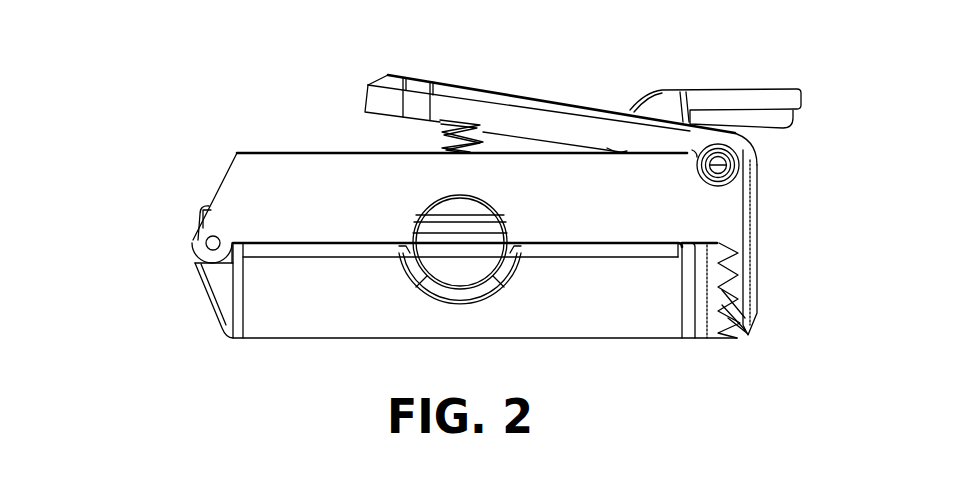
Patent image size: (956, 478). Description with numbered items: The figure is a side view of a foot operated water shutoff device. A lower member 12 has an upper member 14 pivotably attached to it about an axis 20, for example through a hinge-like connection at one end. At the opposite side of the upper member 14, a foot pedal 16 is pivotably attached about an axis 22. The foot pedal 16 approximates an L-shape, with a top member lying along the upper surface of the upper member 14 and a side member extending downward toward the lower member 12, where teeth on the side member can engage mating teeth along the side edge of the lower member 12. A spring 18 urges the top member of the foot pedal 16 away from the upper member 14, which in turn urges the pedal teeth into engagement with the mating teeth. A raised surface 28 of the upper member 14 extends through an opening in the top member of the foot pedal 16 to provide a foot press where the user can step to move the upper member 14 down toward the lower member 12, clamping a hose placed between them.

The lower member 12 is at (292, 318).
The upper member 14 is at (242, 195).
The foot pedal 16 is at (448, 110).
The spring 18 is at (440, 138).
The axis 20 is at (205, 243).
The axis 22 is at (730, 167).
The raised surface 28 is at (710, 100).